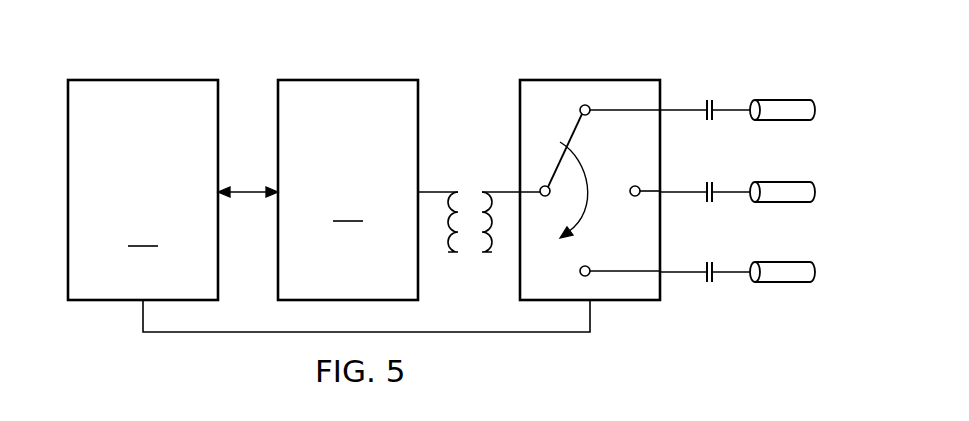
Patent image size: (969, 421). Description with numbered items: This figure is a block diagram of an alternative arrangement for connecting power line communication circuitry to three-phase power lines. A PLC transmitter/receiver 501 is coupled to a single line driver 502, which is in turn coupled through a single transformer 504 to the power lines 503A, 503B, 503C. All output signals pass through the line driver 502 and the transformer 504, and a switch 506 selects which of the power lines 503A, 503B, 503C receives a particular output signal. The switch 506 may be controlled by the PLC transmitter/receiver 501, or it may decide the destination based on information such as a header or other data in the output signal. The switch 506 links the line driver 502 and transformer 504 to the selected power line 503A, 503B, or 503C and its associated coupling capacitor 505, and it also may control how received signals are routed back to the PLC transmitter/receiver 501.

The PLC transmitter/receiver 501 is at (143, 190).
The line driver 502 is at (348, 190).
The power line 503A is at (782, 98).
The power line 503B is at (782, 180).
The power line 503C is at (782, 284).
The transformer 504 is at (470, 191).
The coupling capacitor 505 is at (711, 95).
The switch 506 is at (600, 79).